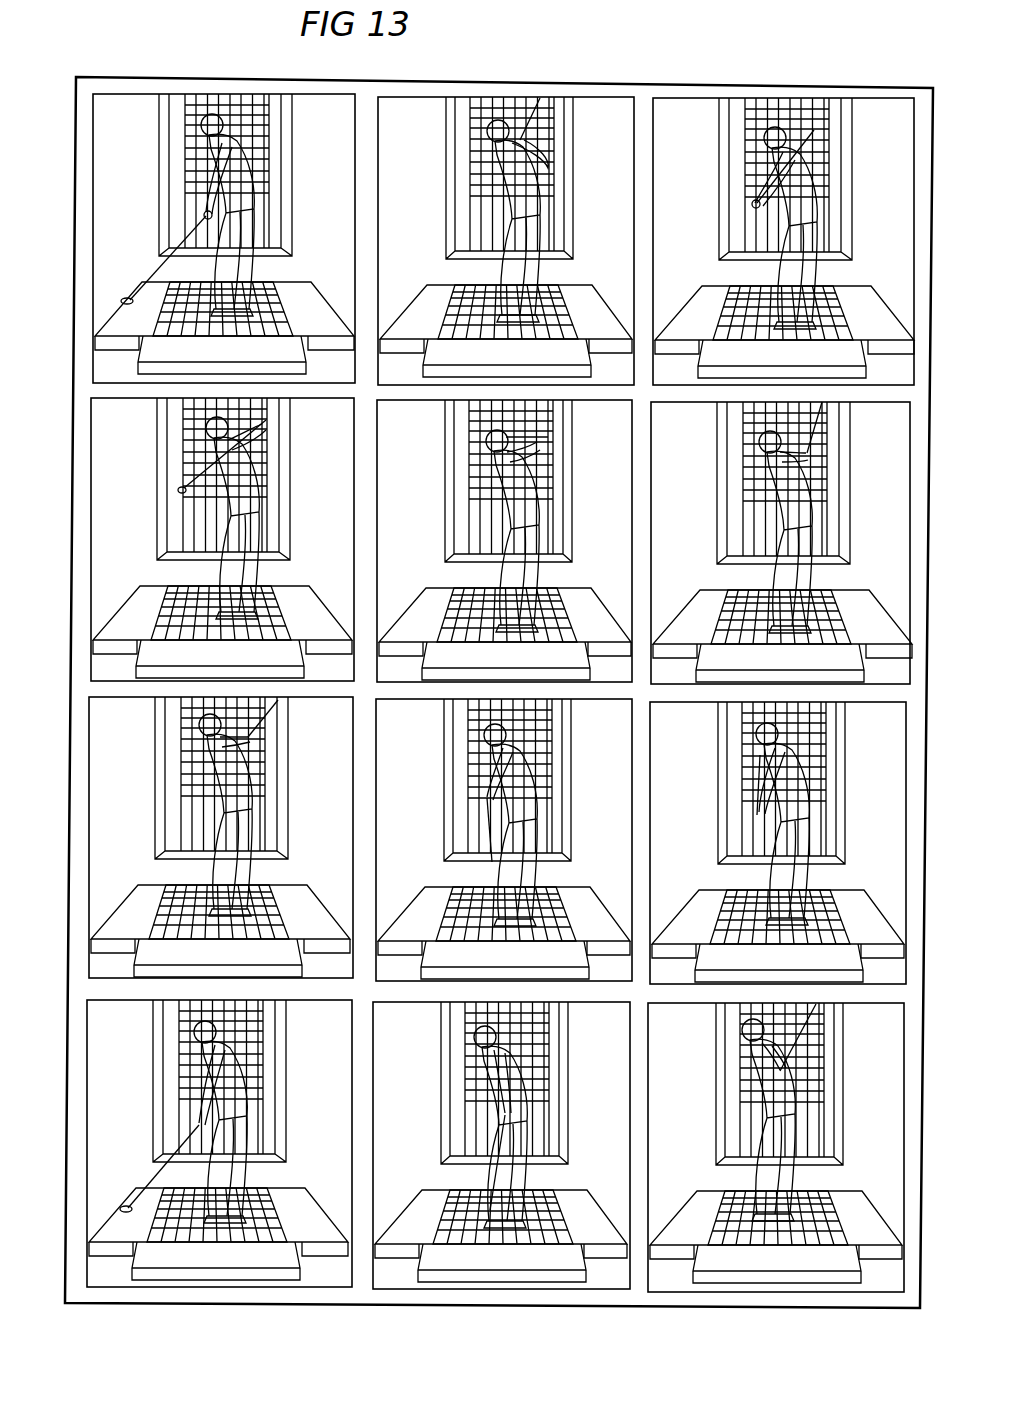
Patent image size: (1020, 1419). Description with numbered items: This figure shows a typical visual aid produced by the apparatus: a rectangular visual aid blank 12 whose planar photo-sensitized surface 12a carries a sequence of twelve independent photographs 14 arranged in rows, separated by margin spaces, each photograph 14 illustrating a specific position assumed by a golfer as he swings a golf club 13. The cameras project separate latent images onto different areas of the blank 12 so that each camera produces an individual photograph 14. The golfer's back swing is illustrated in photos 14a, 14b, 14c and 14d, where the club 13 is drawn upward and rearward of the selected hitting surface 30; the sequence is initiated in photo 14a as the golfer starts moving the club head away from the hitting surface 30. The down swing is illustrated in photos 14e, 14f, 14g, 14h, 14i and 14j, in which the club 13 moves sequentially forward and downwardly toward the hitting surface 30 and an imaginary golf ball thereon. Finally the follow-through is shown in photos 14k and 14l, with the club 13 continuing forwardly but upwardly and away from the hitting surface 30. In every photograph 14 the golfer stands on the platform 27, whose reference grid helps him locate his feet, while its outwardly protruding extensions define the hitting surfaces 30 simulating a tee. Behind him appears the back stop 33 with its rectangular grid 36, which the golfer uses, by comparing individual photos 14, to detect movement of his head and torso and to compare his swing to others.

The visual aid blank 12 is at (890, 90).
The planar photo-sensitized surface 12a is at (92, 672).
The photograph 14 is at (504, 96).
The photograph 14a is at (340, 96).
The photograph 14b is at (636, 70).
The photograph 14c is at (780, 102).
The photograph 14d is at (93, 480).
The photograph 14e is at (394, 406).
The photograph 14f is at (908, 442).
The photograph 14g is at (89, 760).
The photograph 14h is at (389, 711).
The photograph 14i is at (906, 716).
The photograph 14j is at (87, 1031).
The photograph 14k is at (389, 1013).
The photograph 14l is at (904, 1031).
The golf club 13 is at (170, 272).
The platform 27 is at (300, 288).
The hitting surface 30 is at (430, 887).
The back stop 33 is at (294, 172).
The rectangular grid 36 is at (262, 131).